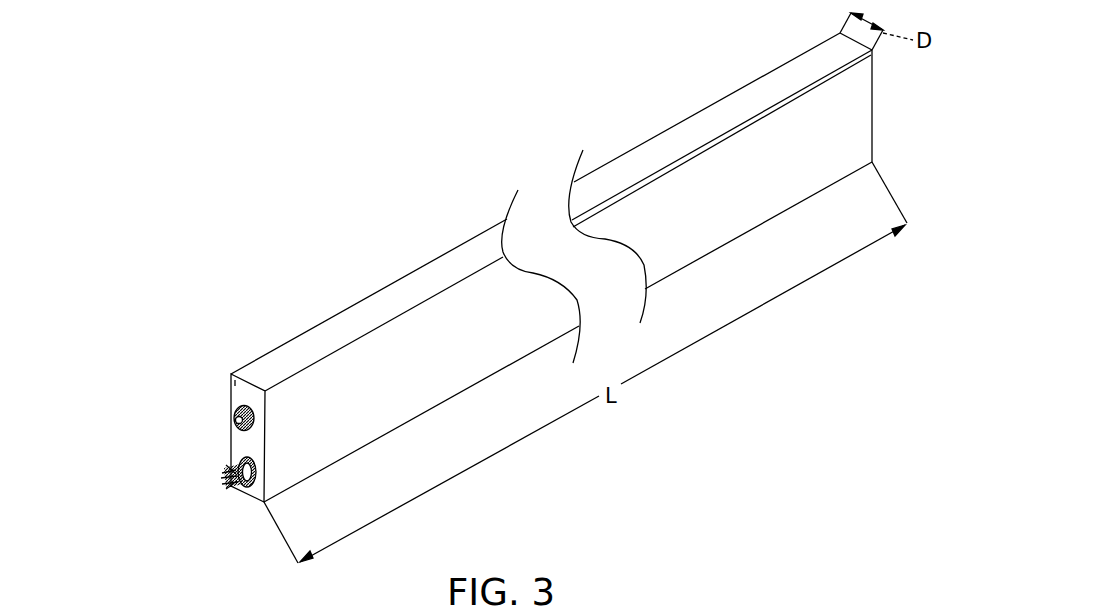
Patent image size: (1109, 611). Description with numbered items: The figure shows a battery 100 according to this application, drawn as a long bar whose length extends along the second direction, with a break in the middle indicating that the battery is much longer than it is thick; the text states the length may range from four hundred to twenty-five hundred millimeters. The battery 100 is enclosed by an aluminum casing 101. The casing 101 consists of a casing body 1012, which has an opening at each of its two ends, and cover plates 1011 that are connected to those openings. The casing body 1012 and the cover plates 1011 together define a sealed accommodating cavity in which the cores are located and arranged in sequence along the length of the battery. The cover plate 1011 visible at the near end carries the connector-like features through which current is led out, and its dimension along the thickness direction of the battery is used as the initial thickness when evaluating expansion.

The battery 100 is at (346, 119).
The casing 101 is at (147, 342).
The cover plate 1011 is at (237, 440).
The casing body 1012 is at (288, 353).